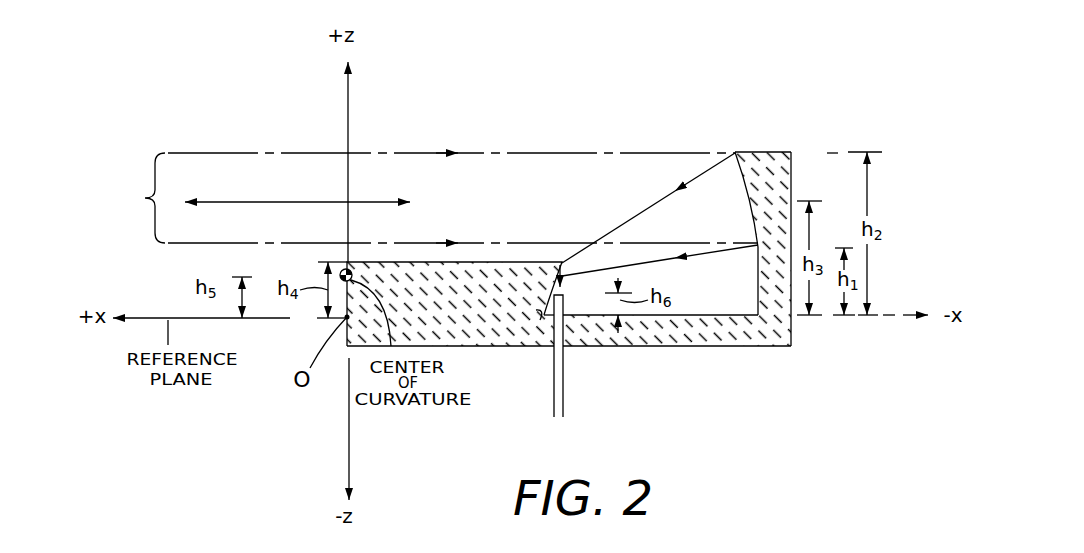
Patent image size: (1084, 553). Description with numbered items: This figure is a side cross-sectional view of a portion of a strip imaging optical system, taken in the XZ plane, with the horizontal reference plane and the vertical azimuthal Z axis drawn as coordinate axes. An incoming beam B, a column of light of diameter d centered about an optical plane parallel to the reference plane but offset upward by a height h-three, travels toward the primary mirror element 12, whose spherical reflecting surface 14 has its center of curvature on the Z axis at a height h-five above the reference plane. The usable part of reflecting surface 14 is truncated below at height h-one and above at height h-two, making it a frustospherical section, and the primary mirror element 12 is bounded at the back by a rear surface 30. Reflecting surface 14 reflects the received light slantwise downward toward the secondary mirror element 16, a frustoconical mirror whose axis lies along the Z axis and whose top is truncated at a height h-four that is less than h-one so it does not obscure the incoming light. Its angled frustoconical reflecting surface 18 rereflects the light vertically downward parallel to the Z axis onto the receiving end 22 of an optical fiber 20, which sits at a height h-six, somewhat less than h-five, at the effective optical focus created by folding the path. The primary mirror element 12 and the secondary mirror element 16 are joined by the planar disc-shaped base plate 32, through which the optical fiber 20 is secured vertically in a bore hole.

The primary mirror element 12 is at (752, 151).
The reflecting surface 14 is at (753, 207).
The secondary mirror element 16 is at (495, 240).
The frustoconical reflecting surface 18 is at (540, 320).
The optical fiber 20 is at (563, 383).
The receiving end 22 is at (565, 295).
The rear surface 30 is at (791, 170).
The base plate 32 is at (714, 334).
The light beam B is at (550, 178).